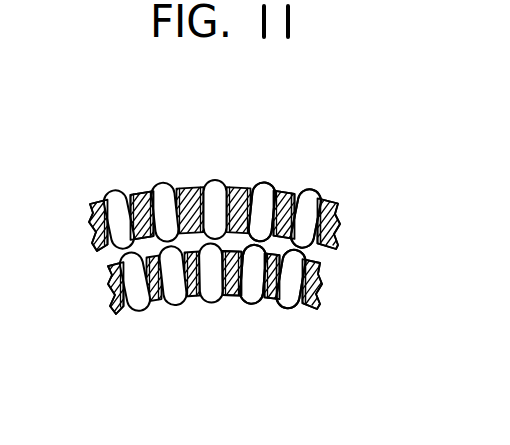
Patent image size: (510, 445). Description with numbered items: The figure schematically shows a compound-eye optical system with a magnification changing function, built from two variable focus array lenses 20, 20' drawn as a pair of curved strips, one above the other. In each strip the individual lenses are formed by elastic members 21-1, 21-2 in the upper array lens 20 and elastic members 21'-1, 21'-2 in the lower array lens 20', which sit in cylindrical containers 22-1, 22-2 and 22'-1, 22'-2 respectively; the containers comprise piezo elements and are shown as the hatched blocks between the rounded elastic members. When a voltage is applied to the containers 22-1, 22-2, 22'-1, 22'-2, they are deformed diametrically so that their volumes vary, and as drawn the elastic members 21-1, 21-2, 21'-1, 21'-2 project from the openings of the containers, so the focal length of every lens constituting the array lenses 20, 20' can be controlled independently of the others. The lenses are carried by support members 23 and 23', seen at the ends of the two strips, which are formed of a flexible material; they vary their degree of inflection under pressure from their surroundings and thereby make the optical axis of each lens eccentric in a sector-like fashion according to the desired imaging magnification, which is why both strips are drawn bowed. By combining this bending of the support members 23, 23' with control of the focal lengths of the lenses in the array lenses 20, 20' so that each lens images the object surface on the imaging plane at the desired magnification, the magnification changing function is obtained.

The variable focus array lens 20 is at (238, 219).
The variable focus array lens 20' is at (242, 287).
The elastic member 21-1 is at (303, 194).
The elastic member 21-2 is at (266, 184).
The cylindrical container 22-1 is at (299, 194).
The cylindrical container 22-2 is at (246, 188).
The support member 23 is at (201, 189).
The elastic member 21'-1 is at (336, 318).
The elastic member 21'-2 is at (234, 316).
The cylindrical container 22'-1 is at (332, 315).
The cylindrical container 22'-2 is at (262, 327).
The support member 23' is at (212, 316).